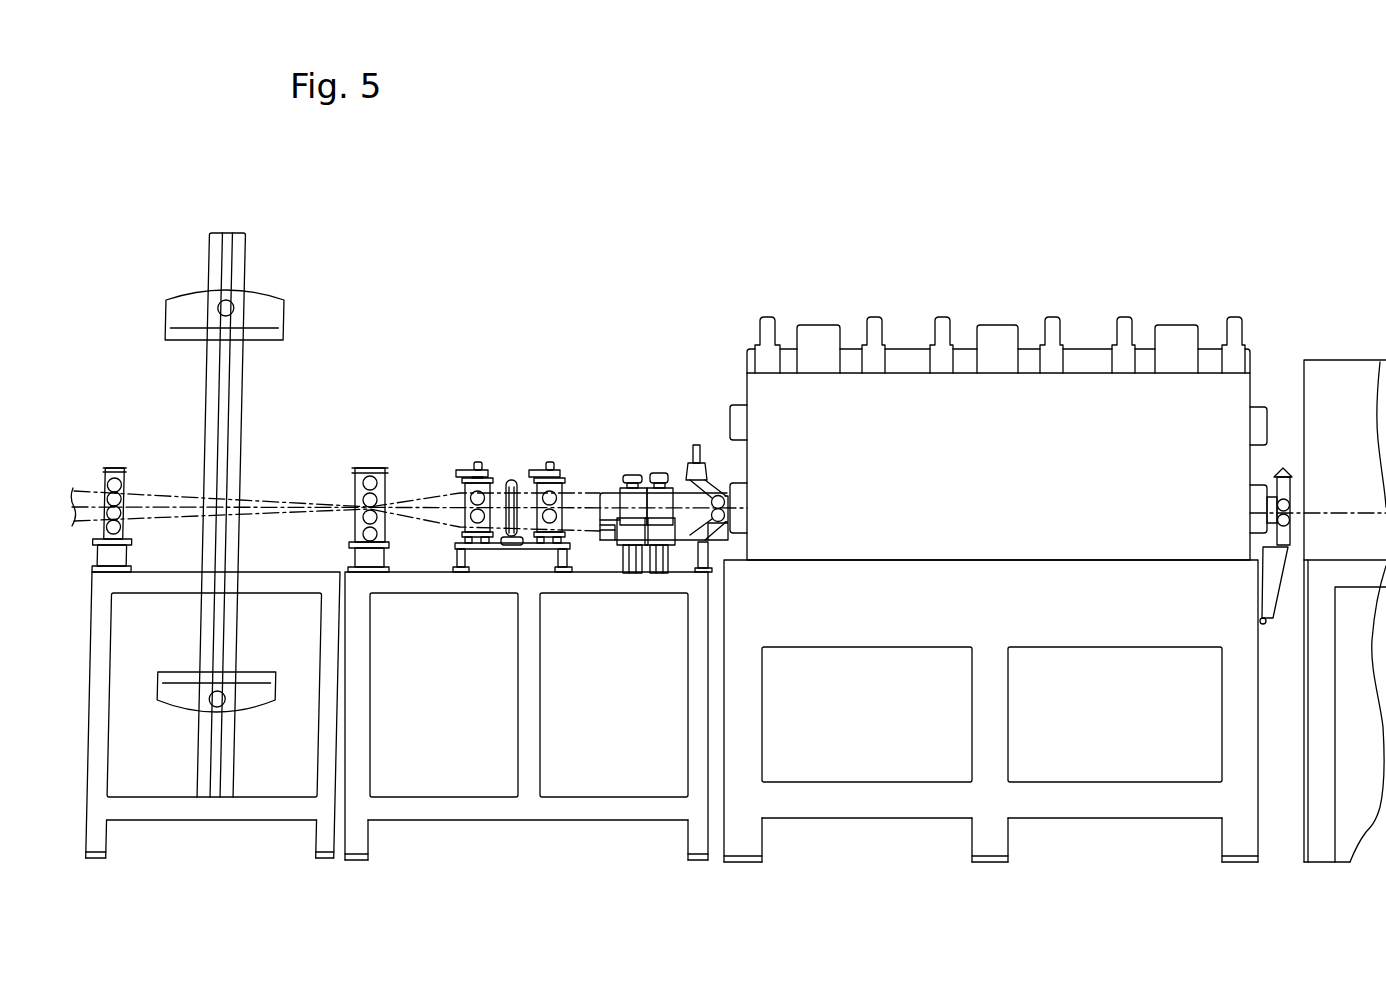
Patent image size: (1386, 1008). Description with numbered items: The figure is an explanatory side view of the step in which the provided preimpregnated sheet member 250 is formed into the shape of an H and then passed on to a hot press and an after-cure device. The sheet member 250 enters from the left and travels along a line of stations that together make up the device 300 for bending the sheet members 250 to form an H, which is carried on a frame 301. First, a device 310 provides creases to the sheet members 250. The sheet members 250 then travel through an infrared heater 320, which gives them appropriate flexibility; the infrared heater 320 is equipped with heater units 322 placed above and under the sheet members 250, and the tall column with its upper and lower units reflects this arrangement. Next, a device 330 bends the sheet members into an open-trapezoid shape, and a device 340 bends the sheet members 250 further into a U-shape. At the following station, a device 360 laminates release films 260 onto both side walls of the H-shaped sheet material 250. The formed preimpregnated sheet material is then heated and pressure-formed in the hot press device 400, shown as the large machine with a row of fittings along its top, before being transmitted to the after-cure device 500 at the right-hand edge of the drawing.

The preimpregnated sheet member 250 is at (175, 492).
The release film 260 is at (612, 527).
The device for bending the sheet members to form an H 300 is at (470, 298).
The frame 301 is at (441, 812).
The device for providing creases 310 is at (118, 468).
The infrared heater 320 is at (244, 272).
The heater unit 322 is at (264, 344).
The device for bending the sheet members to form an open-trapezoid-shape 330 is at (371, 467).
The device for bending the sheet members to form a U-shape 340 is at (519, 450).
The device for laminating release films 360 is at (642, 455).
The hot press device 400 is at (944, 300).
The after-cure device 500 is at (1336, 356).